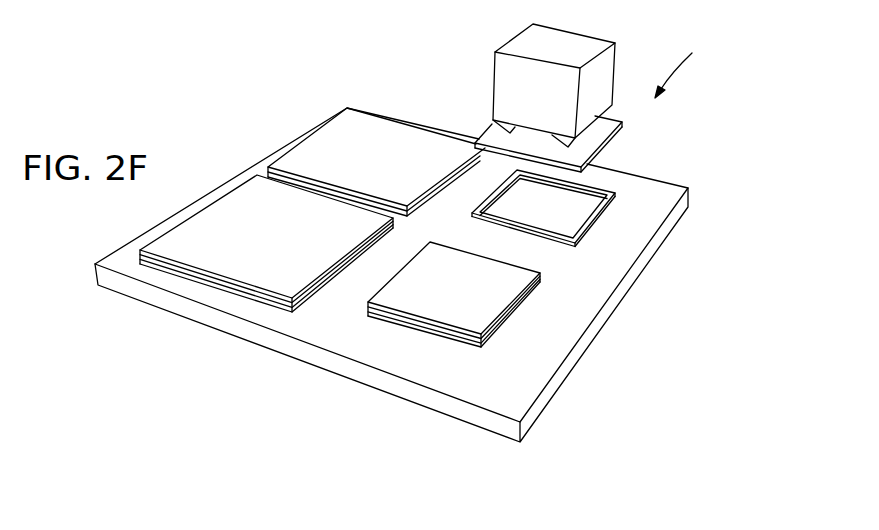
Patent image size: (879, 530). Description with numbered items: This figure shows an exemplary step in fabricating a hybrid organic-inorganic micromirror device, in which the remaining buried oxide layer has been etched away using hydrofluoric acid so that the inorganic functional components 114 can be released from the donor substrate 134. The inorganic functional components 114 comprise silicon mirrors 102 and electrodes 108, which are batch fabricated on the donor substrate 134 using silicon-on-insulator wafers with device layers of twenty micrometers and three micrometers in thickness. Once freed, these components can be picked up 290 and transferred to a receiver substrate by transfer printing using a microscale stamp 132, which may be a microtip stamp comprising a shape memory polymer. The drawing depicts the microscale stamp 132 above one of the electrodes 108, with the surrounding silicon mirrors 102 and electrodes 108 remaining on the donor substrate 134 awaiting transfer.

The microscale stamp 132 is at (587, 47).
The picking up 290 is at (696, 68).
The electrodes 108 is at (605, 127).
The inorganic functional components 114 is at (463, 245).
The silicon mirrors 102 is at (262, 265).
The donor substrate 134 is at (498, 398).